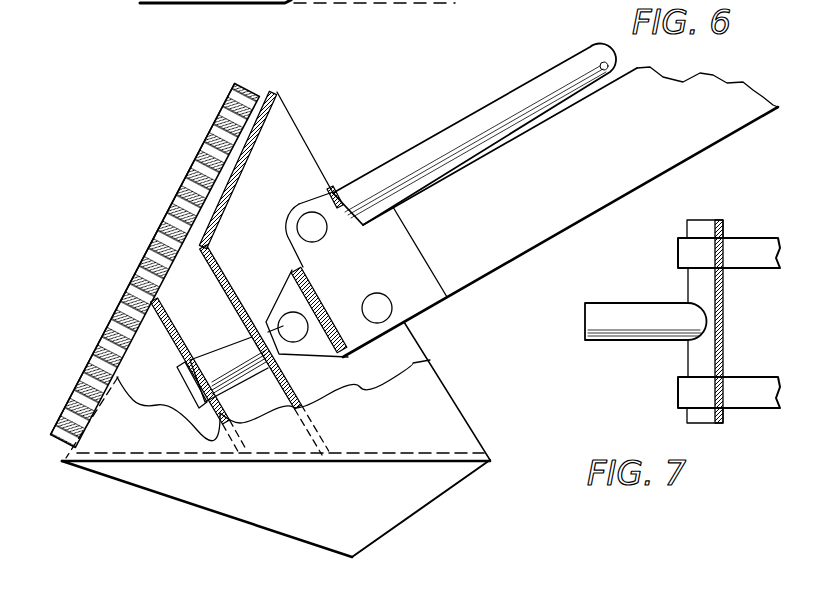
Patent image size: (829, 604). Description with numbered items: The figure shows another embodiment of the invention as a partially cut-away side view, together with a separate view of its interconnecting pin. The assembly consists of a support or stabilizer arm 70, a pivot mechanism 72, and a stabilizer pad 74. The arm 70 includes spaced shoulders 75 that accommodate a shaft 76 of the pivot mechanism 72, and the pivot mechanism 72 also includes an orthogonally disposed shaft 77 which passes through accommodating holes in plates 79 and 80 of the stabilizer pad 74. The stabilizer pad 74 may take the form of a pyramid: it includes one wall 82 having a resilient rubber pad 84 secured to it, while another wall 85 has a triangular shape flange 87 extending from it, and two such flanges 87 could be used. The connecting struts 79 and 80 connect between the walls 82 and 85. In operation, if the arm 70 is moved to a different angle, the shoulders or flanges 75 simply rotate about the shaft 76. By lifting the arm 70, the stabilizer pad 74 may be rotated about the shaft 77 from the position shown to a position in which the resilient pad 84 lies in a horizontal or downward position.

In FIG. 6, the support or stabilizer arm 70 is at (478, 253).
In FIG. 6, the pivot mechanism 72 is at (257, 292).
In FIG. 7, the pivot mechanism 72 is at (647, 264).
In FIG. 6, the stabilizer pad 74 is at (128, 256).
In FIG. 6, the spaced shoulders 75 is at (293, 300).
In FIG. 7, the spaced shoulders 75 is at (752, 247).
In FIG. 7, the shaft 76 is at (720, 318).
In FIG. 6, the orthogonally disposed shaft 77 is at (222, 360).
In FIG. 7, the orthogonally disposed shaft 77 is at (622, 334).
In FIG. 6, the plate 79 is at (168, 336).
In FIG. 6, the plate 80 is at (214, 252).
In FIG. 6, the wall 82 is at (244, 162).
In FIG. 6, the resilient rubber pad 84 is at (100, 345).
In FIG. 6, the wall 85 is at (415, 453).
In FIG. 6, the triangular shape flange 87 is at (398, 495).